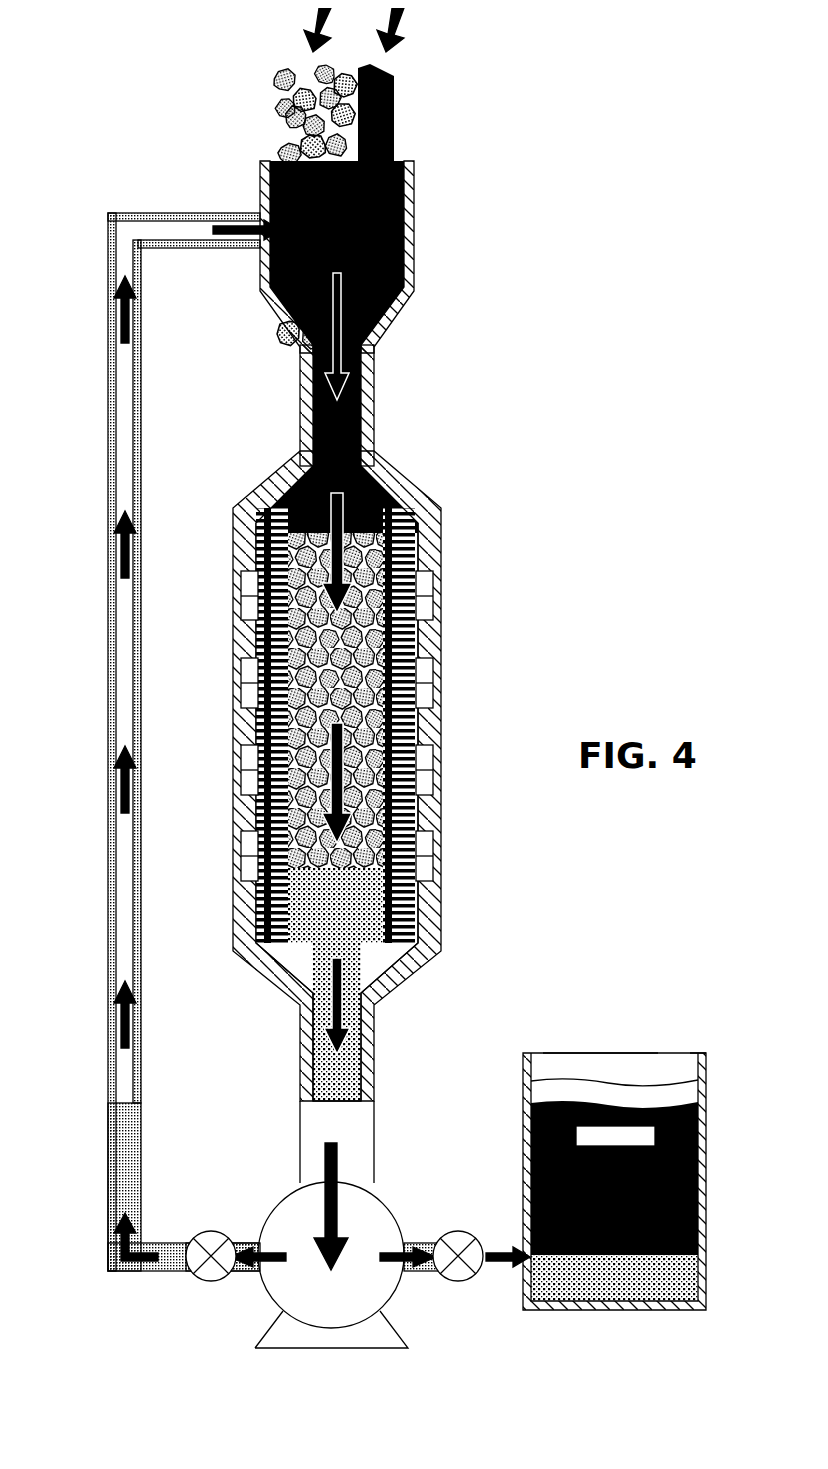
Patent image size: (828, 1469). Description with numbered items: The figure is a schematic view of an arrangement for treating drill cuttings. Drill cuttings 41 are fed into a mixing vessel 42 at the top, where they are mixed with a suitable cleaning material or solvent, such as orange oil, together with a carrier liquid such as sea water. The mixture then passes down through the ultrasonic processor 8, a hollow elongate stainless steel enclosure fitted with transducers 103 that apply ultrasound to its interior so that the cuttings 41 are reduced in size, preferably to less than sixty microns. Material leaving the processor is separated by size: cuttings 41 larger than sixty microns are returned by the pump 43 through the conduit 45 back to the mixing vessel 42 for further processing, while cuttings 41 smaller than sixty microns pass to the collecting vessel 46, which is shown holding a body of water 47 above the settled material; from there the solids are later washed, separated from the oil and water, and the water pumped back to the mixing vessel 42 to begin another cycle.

The drill cuttings 41 is at (336, 62).
The mixing vessel 42 is at (406, 274).
The ultrasonic processor 8 is at (433, 632).
The transducer 103 is at (417, 775).
The conduit 45 is at (103, 750).
The pump 43 is at (285, 1224).
The collecting vessel 46 is at (698, 1193).
The water 47 is at (665, 1082).